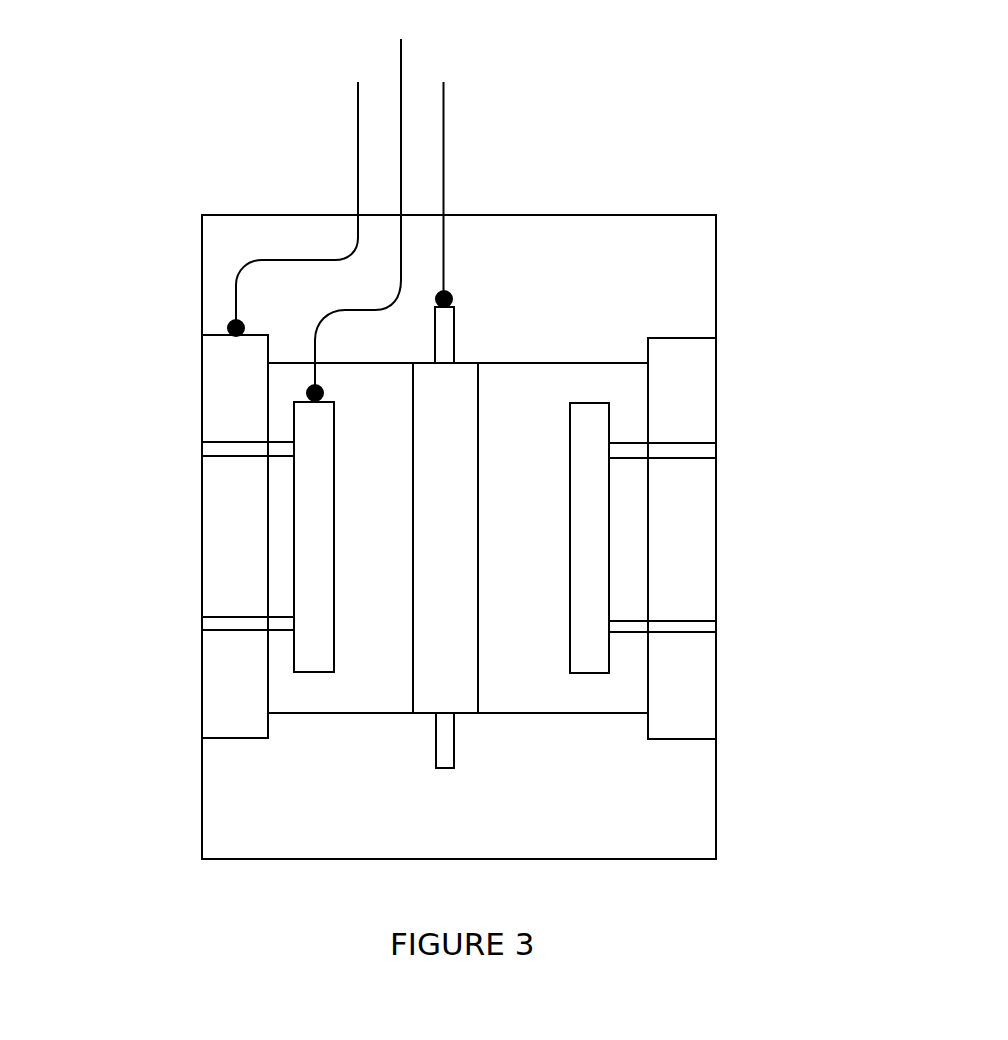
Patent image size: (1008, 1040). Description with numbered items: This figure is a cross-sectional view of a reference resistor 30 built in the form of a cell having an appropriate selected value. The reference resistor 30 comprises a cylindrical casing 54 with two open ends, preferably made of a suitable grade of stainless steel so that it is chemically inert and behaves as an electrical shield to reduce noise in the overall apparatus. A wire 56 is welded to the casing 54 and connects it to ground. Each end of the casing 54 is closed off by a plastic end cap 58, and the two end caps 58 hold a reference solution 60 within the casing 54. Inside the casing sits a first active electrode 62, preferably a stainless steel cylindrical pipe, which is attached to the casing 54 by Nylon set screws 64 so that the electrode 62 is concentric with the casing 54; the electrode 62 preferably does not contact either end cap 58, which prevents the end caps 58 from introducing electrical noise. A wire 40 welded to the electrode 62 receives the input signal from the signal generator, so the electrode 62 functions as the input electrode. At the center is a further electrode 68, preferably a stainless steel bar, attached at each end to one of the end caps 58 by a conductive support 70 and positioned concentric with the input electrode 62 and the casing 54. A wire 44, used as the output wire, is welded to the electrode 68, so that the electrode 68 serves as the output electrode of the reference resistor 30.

The reference resistor 30 is at (742, 150).
The wire 40 is at (401, 50).
The wire 44 is at (443, 145).
The cylindrical casing 54 is at (230, 517).
The wire 56 is at (358, 117).
The plastic end cap 58 is at (688, 270).
The reference solution 60 is at (533, 665).
The first active electrode 62 is at (315, 422).
The Nylon set screws 64 is at (211, 448).
The electrode 68 is at (432, 691).
The conductive support 70 is at (450, 323).